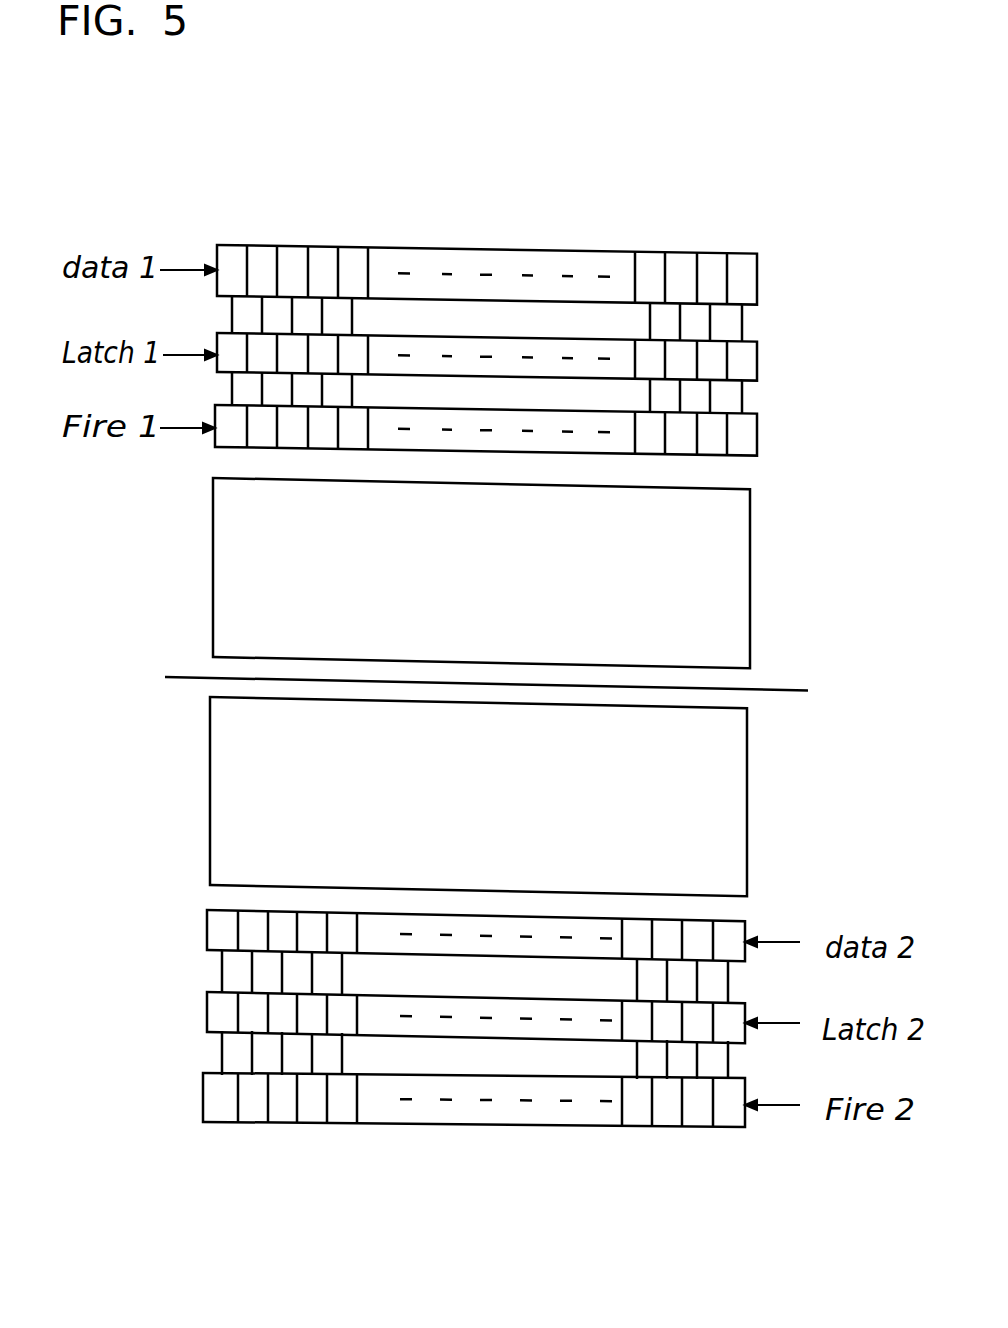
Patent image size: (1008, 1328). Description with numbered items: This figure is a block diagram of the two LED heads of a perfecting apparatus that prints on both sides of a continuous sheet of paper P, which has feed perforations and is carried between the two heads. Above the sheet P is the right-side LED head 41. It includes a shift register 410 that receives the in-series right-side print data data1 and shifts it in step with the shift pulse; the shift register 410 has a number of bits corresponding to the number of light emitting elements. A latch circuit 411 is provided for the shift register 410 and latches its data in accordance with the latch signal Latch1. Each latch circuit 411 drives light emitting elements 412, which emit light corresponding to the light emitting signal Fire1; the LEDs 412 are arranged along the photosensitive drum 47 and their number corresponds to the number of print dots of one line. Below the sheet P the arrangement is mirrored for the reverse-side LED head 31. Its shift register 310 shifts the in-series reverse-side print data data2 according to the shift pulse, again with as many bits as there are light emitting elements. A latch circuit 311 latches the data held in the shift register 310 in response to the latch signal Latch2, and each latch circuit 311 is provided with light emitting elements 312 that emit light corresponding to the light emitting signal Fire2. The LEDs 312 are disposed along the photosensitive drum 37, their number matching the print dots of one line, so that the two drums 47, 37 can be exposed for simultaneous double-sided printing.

The right-side LED head 41 is at (786, 228).
The shift register 410 is at (757, 284).
The latch circuit 411 is at (757, 364).
The light emitting elements (LEDs) 412 is at (757, 438).
The photosensitive drum 47 is at (750, 527).
The continuous sheet of paper P is at (785, 688).
The photosensitive drum 37 is at (742, 790).
The reverse-side LED head 31 is at (172, 1158).
The light emitting elements (LEDs) 312 is at (200, 932).
The latch circuit 311 is at (205, 1020).
The shift register 310 is at (202, 1097).